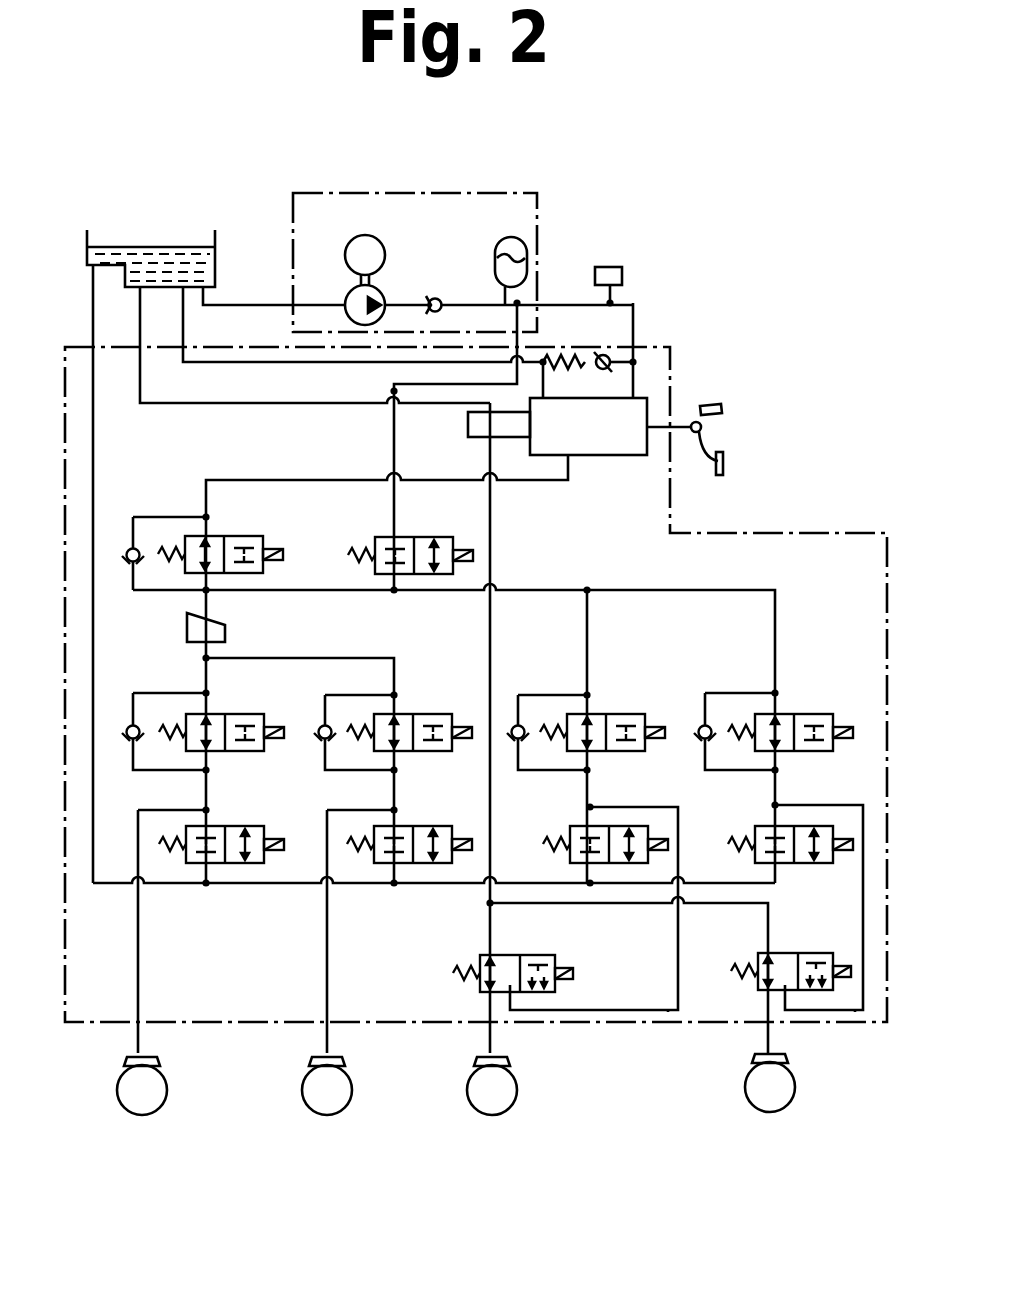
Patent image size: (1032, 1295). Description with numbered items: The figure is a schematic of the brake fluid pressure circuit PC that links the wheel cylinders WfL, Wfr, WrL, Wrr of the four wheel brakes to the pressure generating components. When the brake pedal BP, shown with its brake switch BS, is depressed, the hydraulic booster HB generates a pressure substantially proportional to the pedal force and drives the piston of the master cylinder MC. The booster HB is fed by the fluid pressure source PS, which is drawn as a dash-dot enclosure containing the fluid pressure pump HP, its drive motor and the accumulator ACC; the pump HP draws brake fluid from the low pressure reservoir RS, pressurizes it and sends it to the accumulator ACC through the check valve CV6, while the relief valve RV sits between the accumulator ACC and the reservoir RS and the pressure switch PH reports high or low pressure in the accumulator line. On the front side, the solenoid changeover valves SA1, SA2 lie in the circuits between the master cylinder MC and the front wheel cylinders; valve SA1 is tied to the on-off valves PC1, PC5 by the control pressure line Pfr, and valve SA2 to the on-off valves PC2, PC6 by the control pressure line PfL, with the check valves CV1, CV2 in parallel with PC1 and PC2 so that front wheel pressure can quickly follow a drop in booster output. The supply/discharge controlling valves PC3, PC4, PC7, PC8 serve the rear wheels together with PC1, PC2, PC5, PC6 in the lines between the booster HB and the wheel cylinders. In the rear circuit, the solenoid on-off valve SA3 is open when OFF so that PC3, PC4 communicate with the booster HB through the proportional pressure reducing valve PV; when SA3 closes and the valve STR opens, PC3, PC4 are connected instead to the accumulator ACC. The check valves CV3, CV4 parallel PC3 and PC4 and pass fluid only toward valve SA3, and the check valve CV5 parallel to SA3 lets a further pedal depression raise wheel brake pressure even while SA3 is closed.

The low pressure reservoir RS is at (217, 237).
The fluid pressure source PS is at (543, 255).
The fluid pressure pump HP is at (352, 293).
The check valve CV6 is at (435, 298).
The accumulator ACC is at (514, 237).
The pressure switch PH is at (622, 273).
The relief valve RV is at (600, 356).
The hydraulic booster HB is at (610, 426).
The master cylinder MC is at (470, 423).
The brake switch BS is at (723, 407).
The brake pedal BP is at (724, 462).
The brake fluid pressure circuit PC is at (820, 533).
The check valve CV5 is at (133, 548).
The solenoid on-off valve SA3 is at (232, 540).
The solenoid on-off valve STR is at (400, 537).
The proportional pressure reducing valve PV is at (230, 633).
The check valve CV4 is at (133, 726).
The check valve CV3 is at (325, 726).
The check valve CV2 is at (518, 726).
The check valve CV1 is at (705, 726).
The solenoid on-off valve PC1 is at (805, 714).
The solenoid on-off valve PC2 is at (600, 714).
The solenoid on-off valve PC3 is at (410, 714).
The solenoid on-off valve PC4 is at (222, 714).
The solenoid on-off valve PC5 is at (775, 826).
The solenoid on-off valve PC6 is at (585, 826).
The solenoid on-off valve PC7 is at (410, 826).
The solenoid on-off valve PC8 is at (228, 826).
The solenoid changeover valve SA2 is at (555, 955).
The solenoid changeover valve SA1 is at (785, 953).
The wheel cylinder WrL is at (160, 1060).
The wheel cylinder Wrr is at (345, 1060).
The wheel cylinder WfL is at (510, 1060).
The wheel cylinder Wfr is at (790, 1055).
The control pressure line PfL is at (676, 1012).
The control pressure line Pfr is at (850, 1012).